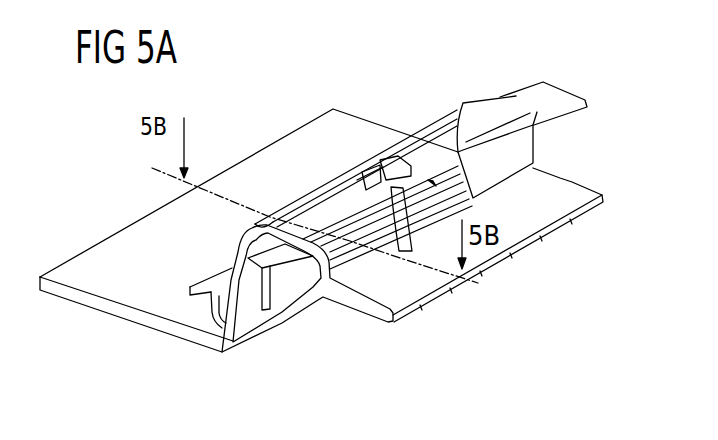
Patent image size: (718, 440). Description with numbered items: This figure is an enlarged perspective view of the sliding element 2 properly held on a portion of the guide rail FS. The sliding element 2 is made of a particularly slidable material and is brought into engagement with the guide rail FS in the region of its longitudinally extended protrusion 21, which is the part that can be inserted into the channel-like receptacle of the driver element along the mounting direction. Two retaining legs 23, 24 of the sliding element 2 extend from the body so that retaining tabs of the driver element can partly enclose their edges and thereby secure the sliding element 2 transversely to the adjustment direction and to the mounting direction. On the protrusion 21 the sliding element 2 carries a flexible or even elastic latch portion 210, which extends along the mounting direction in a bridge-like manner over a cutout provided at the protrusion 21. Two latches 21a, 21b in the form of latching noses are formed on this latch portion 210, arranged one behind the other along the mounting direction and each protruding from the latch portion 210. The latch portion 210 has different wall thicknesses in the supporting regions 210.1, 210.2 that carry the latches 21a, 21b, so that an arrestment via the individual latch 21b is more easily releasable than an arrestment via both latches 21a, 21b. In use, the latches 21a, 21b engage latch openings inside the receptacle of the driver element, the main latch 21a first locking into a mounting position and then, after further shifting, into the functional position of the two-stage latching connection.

The sliding element 2 is at (418, 235).
The protrusion 21 is at (294, 195).
The first latch 21a is at (377, 168).
The second latch 21b is at (400, 162).
The retaining leg 23 is at (395, 300).
The retaining leg 24 is at (212, 286).
The latch portion 210 is at (540, 235).
The supporting region 210.1 is at (547, 195).
The supporting region 210.2 is at (398, 190).
The guide rail FS is at (103, 258).